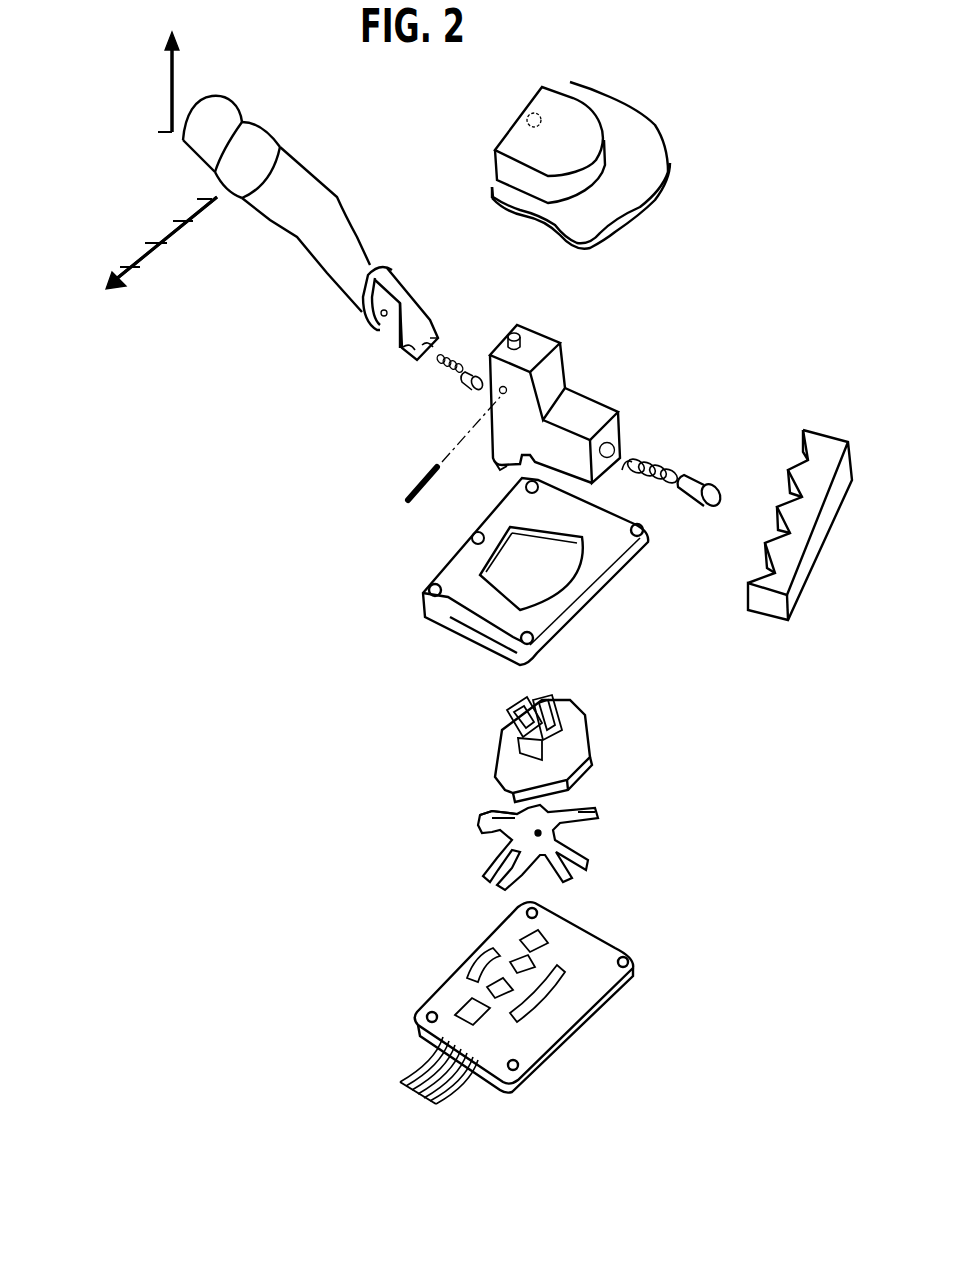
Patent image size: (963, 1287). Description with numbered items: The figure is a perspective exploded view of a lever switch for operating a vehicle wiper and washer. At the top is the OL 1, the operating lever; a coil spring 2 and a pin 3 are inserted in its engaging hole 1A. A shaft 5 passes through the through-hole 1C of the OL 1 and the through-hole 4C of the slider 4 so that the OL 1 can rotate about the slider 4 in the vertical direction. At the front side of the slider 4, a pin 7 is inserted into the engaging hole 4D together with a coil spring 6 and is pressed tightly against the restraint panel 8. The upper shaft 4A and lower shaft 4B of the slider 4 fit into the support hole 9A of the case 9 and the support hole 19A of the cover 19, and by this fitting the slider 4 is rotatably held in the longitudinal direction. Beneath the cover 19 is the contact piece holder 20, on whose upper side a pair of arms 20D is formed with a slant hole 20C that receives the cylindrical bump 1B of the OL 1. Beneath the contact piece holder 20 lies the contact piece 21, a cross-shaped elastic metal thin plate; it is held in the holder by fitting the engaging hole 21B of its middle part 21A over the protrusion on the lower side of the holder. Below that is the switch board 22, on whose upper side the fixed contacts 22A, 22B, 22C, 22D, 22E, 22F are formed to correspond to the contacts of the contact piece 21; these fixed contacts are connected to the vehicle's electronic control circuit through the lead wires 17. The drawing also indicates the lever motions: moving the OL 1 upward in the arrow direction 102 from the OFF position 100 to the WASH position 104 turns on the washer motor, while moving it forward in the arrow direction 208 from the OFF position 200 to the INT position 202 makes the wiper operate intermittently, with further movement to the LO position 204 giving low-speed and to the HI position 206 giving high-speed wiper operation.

The OL 1 is at (303, 128).
The engaging hole 1A is at (440, 336).
The cylindrical bump 1B is at (403, 350).
The through-hole 1C is at (378, 322).
The coil spring 2 is at (438, 366).
The pin 3 is at (462, 384).
The slider 4 is at (588, 338).
The upper shaft 4A is at (518, 333).
The lower shaft 4B is at (497, 470).
The through-hole 4C is at (499, 392).
The engaging hole 4D is at (612, 444).
The shaft 5 is at (420, 471).
The coil spring 6 is at (656, 462).
The pin 7 is at (700, 480).
The restraint panel 8 is at (796, 400).
The case 9 is at (465, 155).
The support hole 9A is at (527, 117).
The lead wires 17 is at (455, 1085).
The cover 19 is at (395, 574).
The support hole 19A is at (471, 538).
The contact piece holder 20 is at (596, 688).
The slant hole 20C is at (508, 715).
The pair of arms 20D is at (520, 742).
The contact piece 21 is at (638, 795).
The middle part 21A is at (530, 836).
The engaging hole 21B is at (490, 812).
The switch board 22 is at (668, 945).
The fixed contact 22A is at (555, 985).
The fixed contact 22B is at (478, 965).
The fixed contact 22C is at (457, 1008).
The fixed contact 22D is at (512, 960).
The fixed contact 22E is at (488, 985).
The fixed contact 22F is at (522, 936).
The OFF position 100 is at (121, 140).
The arrow direction 102 is at (170, 104).
The WASH position 104 is at (118, 81).
The OFF position 200 is at (160, 239).
The INT position 202 is at (135, 223).
The LO position 204 is at (110, 246).
The HI position 206 is at (84, 270).
The arrow direction 208 is at (178, 225).